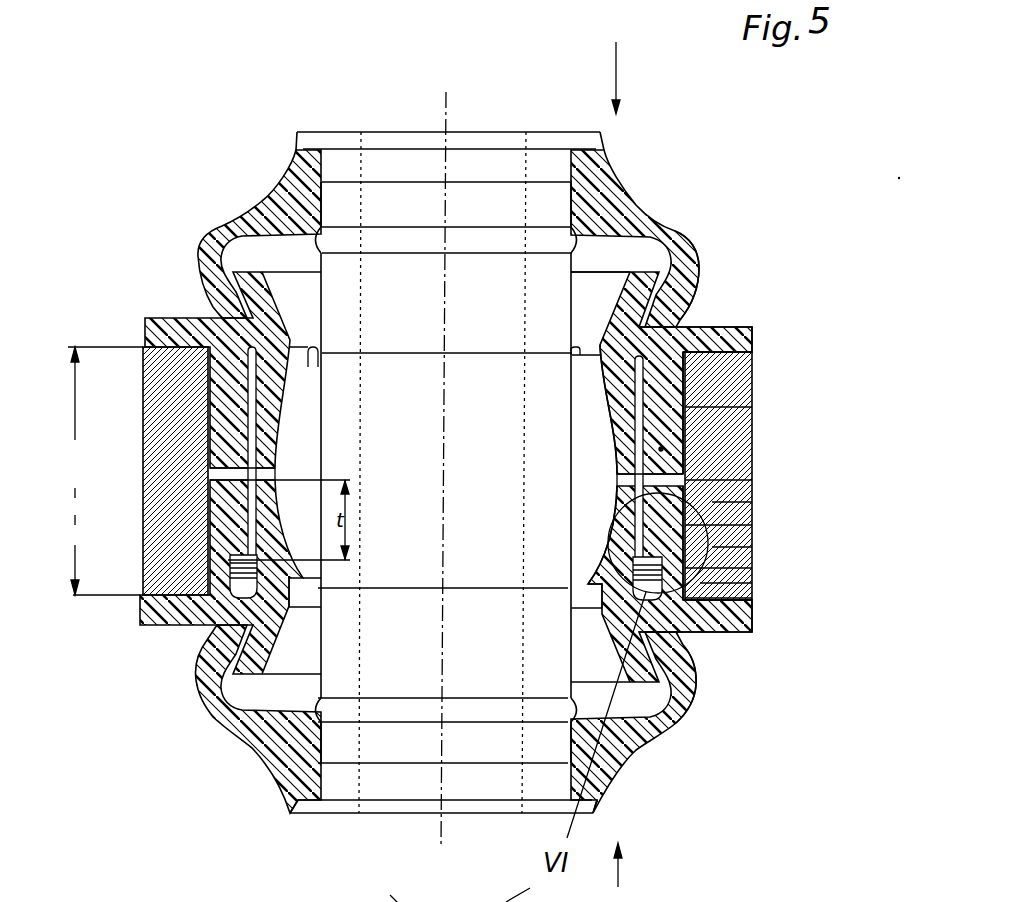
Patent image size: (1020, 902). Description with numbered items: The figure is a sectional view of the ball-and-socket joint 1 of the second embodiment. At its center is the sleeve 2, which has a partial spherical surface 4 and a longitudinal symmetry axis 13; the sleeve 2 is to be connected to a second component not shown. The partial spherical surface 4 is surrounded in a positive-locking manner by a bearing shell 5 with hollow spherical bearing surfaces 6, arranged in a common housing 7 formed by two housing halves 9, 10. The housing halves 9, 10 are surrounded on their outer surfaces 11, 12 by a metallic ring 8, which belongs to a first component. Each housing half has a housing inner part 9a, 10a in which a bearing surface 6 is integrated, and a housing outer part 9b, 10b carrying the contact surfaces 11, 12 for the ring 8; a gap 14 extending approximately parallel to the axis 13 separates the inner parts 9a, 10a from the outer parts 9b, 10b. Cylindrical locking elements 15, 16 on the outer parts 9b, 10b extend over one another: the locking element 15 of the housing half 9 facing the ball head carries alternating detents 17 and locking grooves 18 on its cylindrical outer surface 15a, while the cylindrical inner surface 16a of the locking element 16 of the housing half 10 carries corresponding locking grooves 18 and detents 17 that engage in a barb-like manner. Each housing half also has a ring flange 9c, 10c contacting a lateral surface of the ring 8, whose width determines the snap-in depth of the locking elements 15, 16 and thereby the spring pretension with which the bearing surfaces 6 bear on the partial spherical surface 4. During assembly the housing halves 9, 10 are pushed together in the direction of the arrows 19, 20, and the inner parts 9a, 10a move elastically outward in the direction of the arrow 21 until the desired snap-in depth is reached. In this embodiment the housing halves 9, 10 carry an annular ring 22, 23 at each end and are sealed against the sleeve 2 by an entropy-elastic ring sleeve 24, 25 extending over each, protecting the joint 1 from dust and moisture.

The ball-and-socket joint 1 is at (250, 786).
The sleeve 2 is at (340, 808).
The partial spherical surface 4 is at (258, 690).
The bearing shell 5 is at (620, 500).
The hollow spherical bearing surfaces 6 is at (600, 423).
The housing 7 is at (598, 324).
The ring 8 is at (752, 445).
The housing half 9 is at (688, 314).
The housing inner part 9a is at (617, 377).
The housing outer part 9b is at (680, 330).
The ring flange 9c is at (745, 335).
The housing half 10 is at (688, 637).
The housing inner part 10a is at (583, 593).
The housing outer part 10b is at (752, 525).
The ring flange 10c is at (740, 620).
The outer surface 11 is at (700, 398).
The outer surface 12 is at (752, 598).
The longitudinal symmetry axis 13 is at (438, 650).
The gap 14 is at (639, 392).
The cylindrical locking element 15 is at (752, 480).
The cylindrical outer surface 15a is at (752, 547).
The cylindrical locking element 16 is at (752, 502).
The cylindrical inner surface 16a is at (752, 568).
The detents 17 is at (524, 891).
The locking grooves 18 is at (380, 886).
The arrow 19 is at (618, 80).
The arrow 20 is at (620, 866).
The arrows 21 is at (253, 477).
The annular ring 22 is at (672, 262).
The annular ring 23 is at (659, 682).
The entropy-elastic ring sleeve 24 is at (628, 207).
The entropy-elastic ring sleeve 25 is at (632, 740).